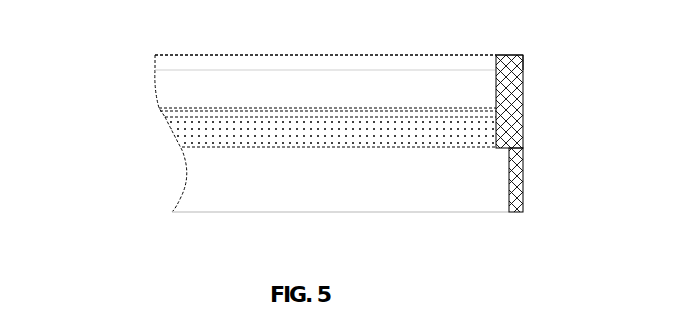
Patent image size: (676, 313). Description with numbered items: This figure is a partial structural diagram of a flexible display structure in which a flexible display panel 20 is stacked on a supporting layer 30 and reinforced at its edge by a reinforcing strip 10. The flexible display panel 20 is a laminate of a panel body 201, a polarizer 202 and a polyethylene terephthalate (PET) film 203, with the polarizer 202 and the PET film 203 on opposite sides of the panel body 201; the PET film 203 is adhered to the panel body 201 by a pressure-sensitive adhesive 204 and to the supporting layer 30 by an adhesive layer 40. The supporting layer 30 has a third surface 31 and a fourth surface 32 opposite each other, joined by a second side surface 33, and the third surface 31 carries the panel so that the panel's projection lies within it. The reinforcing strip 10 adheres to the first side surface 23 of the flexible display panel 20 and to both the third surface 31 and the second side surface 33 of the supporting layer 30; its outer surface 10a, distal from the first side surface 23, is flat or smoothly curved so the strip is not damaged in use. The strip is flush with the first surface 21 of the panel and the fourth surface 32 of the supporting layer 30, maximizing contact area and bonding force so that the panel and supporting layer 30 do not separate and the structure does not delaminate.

The reinforcing strip 10 is at (512, 139).
The surface of the reinforcing strip 10a is at (524, 84).
The flexible display panel 20 is at (270, 74).
The first surface 21 is at (400, 55).
The first side surface 23 is at (497, 57).
The panel body 201 is at (154, 77).
The polarizer 202 is at (155, 55).
The polyethylene terephthalate (PET) film 203 is at (296, 111).
The pressure-sensitive adhesive 204 is at (158, 103).
The supporting layer 30 is at (316, 186).
The third surface 31 is at (184, 153).
The fourth surface 32 is at (420, 213).
The second side surface 33 is at (509, 206).
The adhesive layer 40 is at (172, 128).